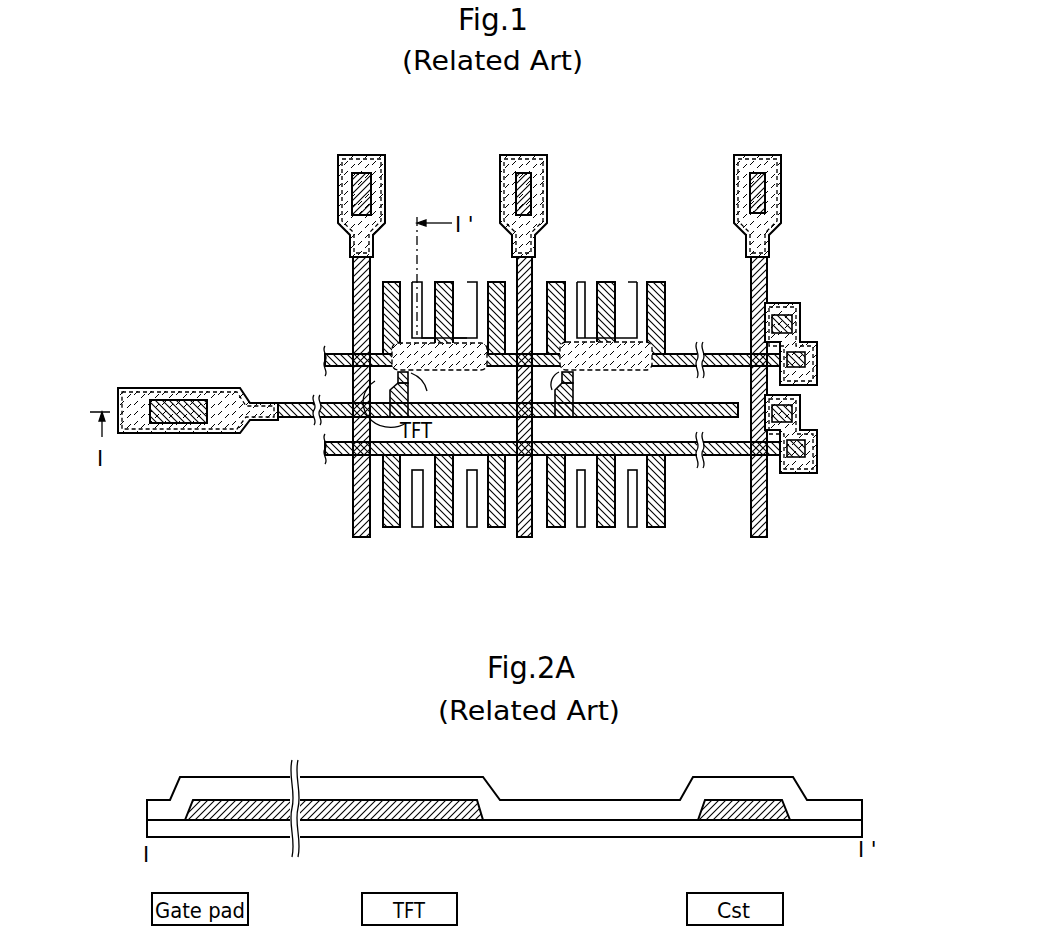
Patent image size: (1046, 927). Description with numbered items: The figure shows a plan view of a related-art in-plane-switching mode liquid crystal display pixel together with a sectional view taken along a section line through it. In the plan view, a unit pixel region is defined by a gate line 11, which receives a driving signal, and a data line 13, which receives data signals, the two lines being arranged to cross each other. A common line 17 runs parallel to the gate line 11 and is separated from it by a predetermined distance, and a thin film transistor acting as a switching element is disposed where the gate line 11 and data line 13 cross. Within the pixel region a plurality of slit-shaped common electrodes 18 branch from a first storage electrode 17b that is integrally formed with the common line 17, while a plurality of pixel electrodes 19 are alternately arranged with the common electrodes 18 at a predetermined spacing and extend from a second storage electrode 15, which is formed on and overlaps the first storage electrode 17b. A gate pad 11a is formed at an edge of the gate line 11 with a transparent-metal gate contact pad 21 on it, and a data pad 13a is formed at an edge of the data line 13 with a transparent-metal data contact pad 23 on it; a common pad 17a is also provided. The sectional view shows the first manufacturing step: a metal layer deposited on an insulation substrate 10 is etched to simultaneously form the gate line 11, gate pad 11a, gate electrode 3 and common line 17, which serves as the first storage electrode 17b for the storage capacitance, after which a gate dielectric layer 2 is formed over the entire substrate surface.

In FIG. 1, the data contact pad 23 is at (363, 155).
In FIG. 1, the data pad 13a is at (371, 195).
In FIG. 1, the data line 13 is at (353, 262).
In FIG. 1, the common electrodes 18 is at (383, 300).
In FIG. 1, the pixel electrodes 19 is at (470, 282).
In FIG. 1, the common line 17 is at (728, 353).
In FIG. 1, the common pad 17a is at (805, 358).
In FIG. 1, the first storage electrode 17b is at (477, 372).
In FIG. 2A, the first storage electrode 17b is at (752, 813).
In FIG. 1, the gate line 11 is at (297, 418).
In FIG. 2A, the gate line 11 is at (332, 813).
In FIG. 1, the gate pad 11a is at (162, 423).
In FIG. 2A, the gate pad 11a is at (240, 813).
In FIG. 1, the gate contact pad 21 is at (200, 435).
In FIG. 1, the second storage electrode 15 is at (438, 373).
In FIG. 2A, the gate electrode 3 is at (435, 813).
In FIG. 2A, the gate dielectric layer 2 is at (593, 812).
In FIG. 2A, the insulation substrate 10 is at (833, 828).